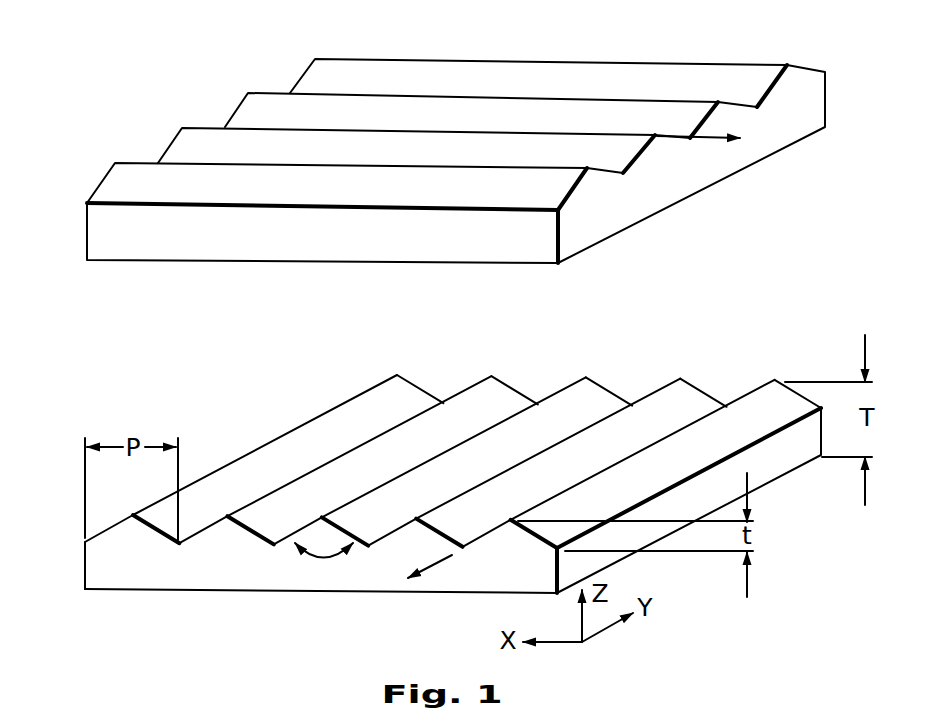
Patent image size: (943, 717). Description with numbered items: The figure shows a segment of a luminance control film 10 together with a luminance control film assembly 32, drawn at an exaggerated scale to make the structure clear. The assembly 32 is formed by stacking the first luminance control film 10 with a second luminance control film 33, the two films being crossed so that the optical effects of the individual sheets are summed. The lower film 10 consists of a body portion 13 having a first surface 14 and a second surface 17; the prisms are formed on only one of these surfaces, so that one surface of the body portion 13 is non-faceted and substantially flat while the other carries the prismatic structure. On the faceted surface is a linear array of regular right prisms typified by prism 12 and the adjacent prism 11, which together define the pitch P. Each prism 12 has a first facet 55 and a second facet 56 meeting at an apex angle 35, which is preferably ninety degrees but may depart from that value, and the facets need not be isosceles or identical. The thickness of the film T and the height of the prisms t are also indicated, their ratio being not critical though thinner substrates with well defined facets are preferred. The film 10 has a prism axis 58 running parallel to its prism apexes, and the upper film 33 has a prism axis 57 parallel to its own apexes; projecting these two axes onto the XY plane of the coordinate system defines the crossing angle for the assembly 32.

The luminance control film 10 is at (402, 617).
The prism 11 is at (655, 400).
The prism 12 is at (578, 388).
The body portion 13 is at (127, 568).
The first surface 14 is at (382, 418).
The second surface 17 is at (213, 592).
The luminance control film assembly 32 is at (85, 139).
The second luminance control film 33 is at (273, 265).
The apex angle 35 is at (324, 558).
The first facet 55 is at (557, 439).
The second facet 56 is at (472, 440).
The prism axis 57 is at (553, 130).
The prism axis 58 is at (452, 553).